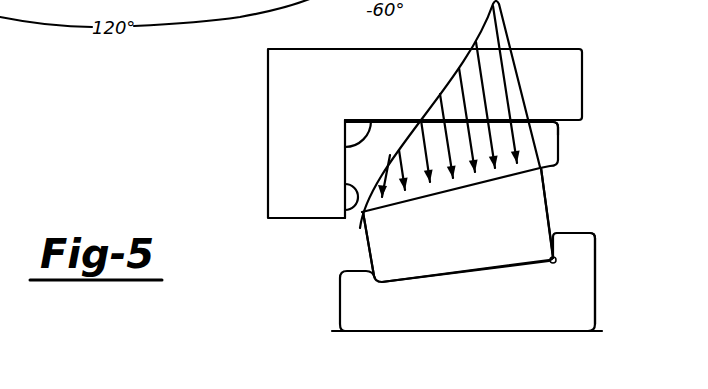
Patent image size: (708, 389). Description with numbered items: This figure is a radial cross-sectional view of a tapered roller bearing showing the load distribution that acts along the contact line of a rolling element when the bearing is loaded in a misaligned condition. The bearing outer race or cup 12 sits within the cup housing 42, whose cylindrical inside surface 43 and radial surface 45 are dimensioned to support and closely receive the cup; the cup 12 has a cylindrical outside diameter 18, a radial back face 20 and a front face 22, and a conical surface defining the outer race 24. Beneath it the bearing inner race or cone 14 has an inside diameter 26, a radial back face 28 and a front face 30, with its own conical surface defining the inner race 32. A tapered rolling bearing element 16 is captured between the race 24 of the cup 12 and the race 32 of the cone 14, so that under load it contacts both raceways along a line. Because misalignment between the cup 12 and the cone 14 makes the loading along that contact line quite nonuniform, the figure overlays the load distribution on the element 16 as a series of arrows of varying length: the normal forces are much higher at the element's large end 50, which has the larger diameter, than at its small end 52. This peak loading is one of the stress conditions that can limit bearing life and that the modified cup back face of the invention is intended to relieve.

The bearing cup 12 is at (560, 137).
The bearing cone 14 is at (596, 236).
The tapered rolling bearing element 16 is at (358, 243).
The cylindrical outside diameter 18 is at (363, 119).
The radial back face 20 is at (345, 163).
The front face 22 is at (560, 127).
The race 24 is at (542, 166).
The inside diameter 26 is at (523, 331).
The radial back face 28 is at (340, 308).
The front face 30 is at (604, 303).
The race 32 is at (459, 272).
The cup housing 42 is at (525, 43).
The cylindrical inside surface 43 is at (345, 140).
The radial surface 45 is at (360, 214).
The large end 50 is at (536, 207).
The small end 52 is at (366, 252).